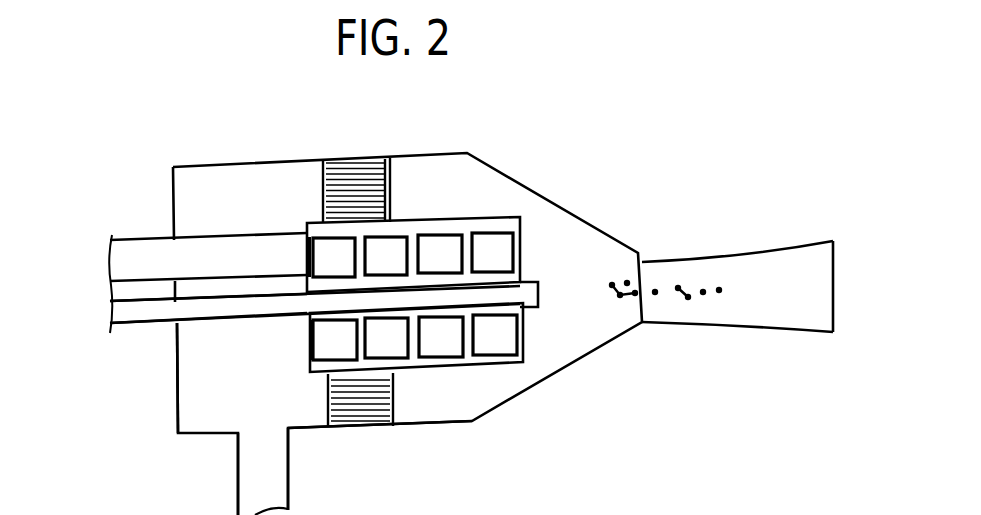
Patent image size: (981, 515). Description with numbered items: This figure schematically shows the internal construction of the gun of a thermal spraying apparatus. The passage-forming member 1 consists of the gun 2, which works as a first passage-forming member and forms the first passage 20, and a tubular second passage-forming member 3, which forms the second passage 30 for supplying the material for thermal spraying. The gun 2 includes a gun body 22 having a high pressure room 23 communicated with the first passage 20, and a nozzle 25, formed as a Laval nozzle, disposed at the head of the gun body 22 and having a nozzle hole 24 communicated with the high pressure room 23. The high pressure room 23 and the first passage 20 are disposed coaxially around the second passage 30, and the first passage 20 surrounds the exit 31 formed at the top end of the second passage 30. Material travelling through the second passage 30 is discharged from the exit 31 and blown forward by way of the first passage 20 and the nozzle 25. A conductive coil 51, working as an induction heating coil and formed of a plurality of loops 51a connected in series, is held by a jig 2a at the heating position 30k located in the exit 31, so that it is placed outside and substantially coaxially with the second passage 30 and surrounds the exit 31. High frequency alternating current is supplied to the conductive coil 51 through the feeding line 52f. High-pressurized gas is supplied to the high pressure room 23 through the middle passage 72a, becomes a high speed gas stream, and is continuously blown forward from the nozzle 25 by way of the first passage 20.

The passage-forming member 1 is at (149, 206).
The gun 2 is at (503, 408).
The jig 2a is at (358, 170).
The second passage-forming member 3 is at (145, 323).
The first passage 20 is at (592, 243).
The gun body 22 is at (438, 425).
The high pressure room 23 is at (197, 402).
The nozzle hole 24 is at (737, 283).
The nozzle 25 is at (795, 255).
The second passage 30 is at (247, 305).
The heating position 30k is at (300, 322).
The exit 31 is at (543, 297).
The conductive coil 51 is at (385, 258).
The loops 51a is at (330, 257).
The feeding line 52f is at (123, 258).
The middle passage 72a is at (288, 490).